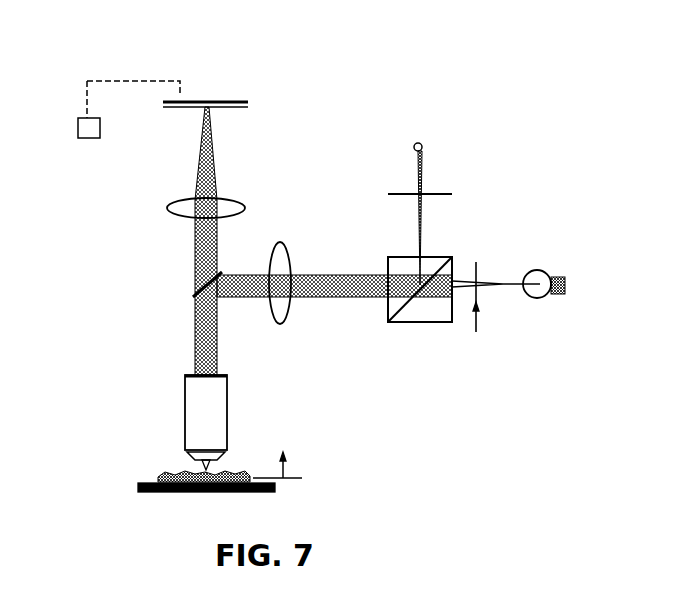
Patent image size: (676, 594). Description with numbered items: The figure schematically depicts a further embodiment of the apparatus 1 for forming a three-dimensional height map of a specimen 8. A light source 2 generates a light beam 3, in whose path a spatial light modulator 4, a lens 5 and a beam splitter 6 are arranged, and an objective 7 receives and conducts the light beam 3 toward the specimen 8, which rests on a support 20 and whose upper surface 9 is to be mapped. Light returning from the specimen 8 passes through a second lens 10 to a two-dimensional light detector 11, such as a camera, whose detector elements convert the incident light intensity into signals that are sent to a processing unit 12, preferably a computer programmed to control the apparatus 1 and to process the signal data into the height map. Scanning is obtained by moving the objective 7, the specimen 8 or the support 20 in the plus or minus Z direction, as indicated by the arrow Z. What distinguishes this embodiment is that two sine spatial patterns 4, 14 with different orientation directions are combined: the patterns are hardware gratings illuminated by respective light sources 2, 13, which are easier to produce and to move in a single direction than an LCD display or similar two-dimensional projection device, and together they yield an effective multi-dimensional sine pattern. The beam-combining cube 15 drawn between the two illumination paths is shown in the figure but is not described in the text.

The apparatus 1 is at (112, 297).
The light source 2 is at (543, 273).
The light beam 3 is at (302, 287).
The spatial light modulator 4 is at (478, 292).
The lens 5 is at (278, 267).
The beam splitter 6 is at (193, 297).
The objective 7 is at (192, 420).
The specimen 8 is at (272, 475).
The upper surface 9 is at (218, 468).
The second lens 10 is at (240, 208).
The light detector 11 is at (248, 104).
The processing unit 12 is at (82, 132).
The light source 13 is at (422, 146).
The sine spatial pattern 14 is at (438, 193).
The beam splitter cube 15 is at (405, 322).
The support 20 is at (152, 481).
The Z direction Z is at (302, 478).